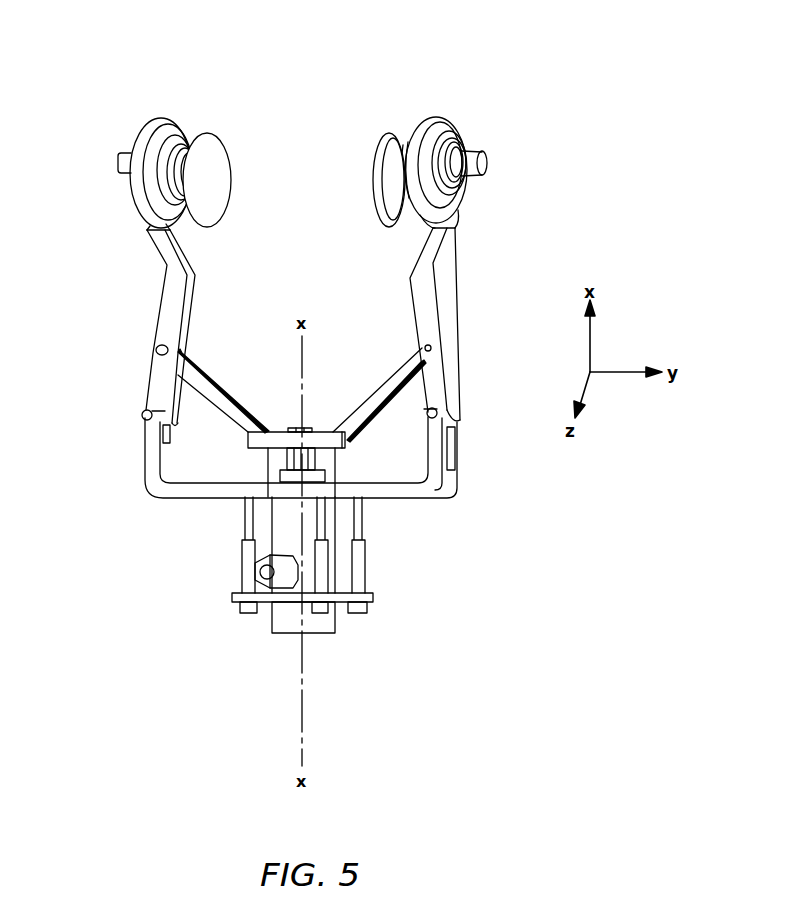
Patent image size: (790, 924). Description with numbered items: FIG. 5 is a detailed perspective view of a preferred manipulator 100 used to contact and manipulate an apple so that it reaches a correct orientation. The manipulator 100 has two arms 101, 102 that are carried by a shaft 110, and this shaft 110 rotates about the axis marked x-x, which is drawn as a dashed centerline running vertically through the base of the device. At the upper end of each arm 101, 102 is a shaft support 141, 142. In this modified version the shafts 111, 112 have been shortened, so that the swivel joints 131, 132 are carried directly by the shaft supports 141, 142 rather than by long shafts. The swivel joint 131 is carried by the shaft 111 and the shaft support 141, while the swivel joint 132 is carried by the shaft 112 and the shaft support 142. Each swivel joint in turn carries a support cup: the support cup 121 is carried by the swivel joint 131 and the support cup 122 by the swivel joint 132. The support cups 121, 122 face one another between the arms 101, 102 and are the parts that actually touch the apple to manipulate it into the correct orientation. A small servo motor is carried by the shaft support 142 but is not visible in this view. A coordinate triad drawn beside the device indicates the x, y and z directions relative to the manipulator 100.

The manipulator 100 is at (190, 80).
The arm 101 is at (158, 287).
The arm 102 is at (447, 300).
The shaft 110 is at (272, 617).
The shaft 111 is at (130, 150).
The shaft 112 is at (470, 148).
The support cup 121 is at (220, 135).
The support cup 122 is at (377, 153).
The swivel joint 131 is at (190, 143).
The swivel joint 132 is at (403, 143).
The shaft support 141 is at (157, 120).
The shaft support 142 is at (445, 118).